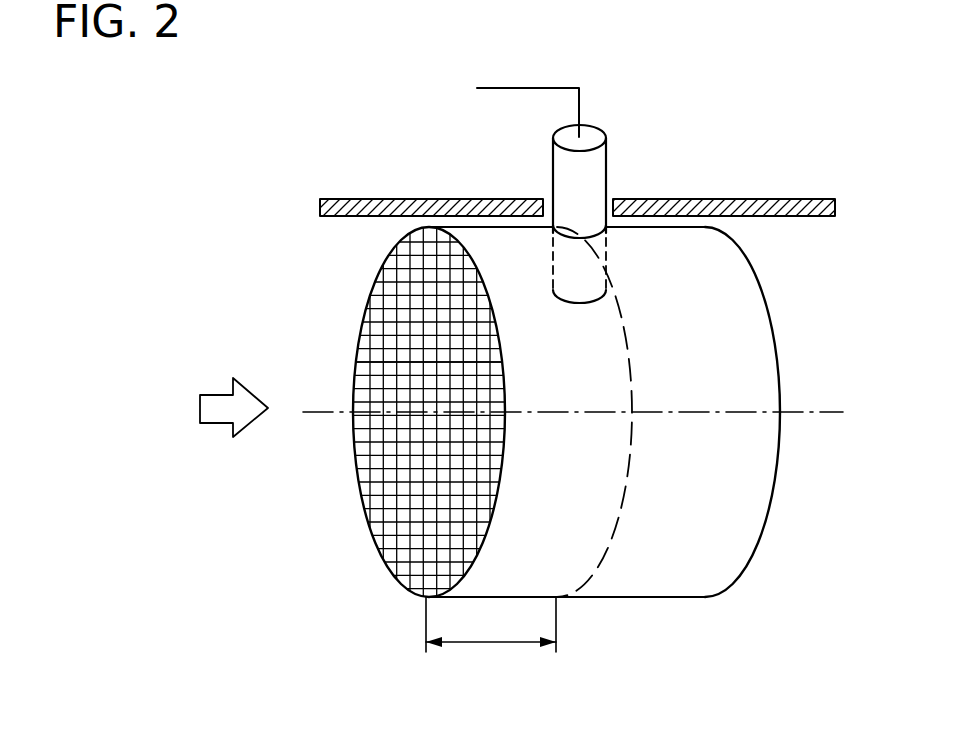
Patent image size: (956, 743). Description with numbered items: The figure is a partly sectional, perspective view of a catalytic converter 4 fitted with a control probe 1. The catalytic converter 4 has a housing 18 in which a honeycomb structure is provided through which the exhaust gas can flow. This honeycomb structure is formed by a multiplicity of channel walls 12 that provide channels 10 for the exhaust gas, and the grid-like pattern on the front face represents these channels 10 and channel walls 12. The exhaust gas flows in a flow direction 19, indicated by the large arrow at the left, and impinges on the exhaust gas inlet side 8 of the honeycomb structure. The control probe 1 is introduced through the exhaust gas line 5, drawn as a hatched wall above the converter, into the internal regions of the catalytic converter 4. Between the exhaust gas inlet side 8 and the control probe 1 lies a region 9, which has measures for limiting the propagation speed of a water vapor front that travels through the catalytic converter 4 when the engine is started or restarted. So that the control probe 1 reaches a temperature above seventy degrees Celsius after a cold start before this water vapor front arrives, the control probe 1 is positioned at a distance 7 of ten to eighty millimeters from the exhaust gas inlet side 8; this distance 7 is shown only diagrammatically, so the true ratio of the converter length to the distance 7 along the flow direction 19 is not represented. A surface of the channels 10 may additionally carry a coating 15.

The control probe 1 is at (595, 172).
The catalytic converter 4 is at (818, 333).
The exhaust gas line 5 is at (763, 199).
The distance 7 is at (482, 643).
The exhaust gas inlet side 8 is at (392, 475).
The region 9 is at (563, 545).
The channels 10 is at (393, 308).
The channel walls 12 is at (383, 358).
The coating 15 is at (560, 262).
The housing 18 is at (682, 598).
The flow direction 19 is at (218, 380).